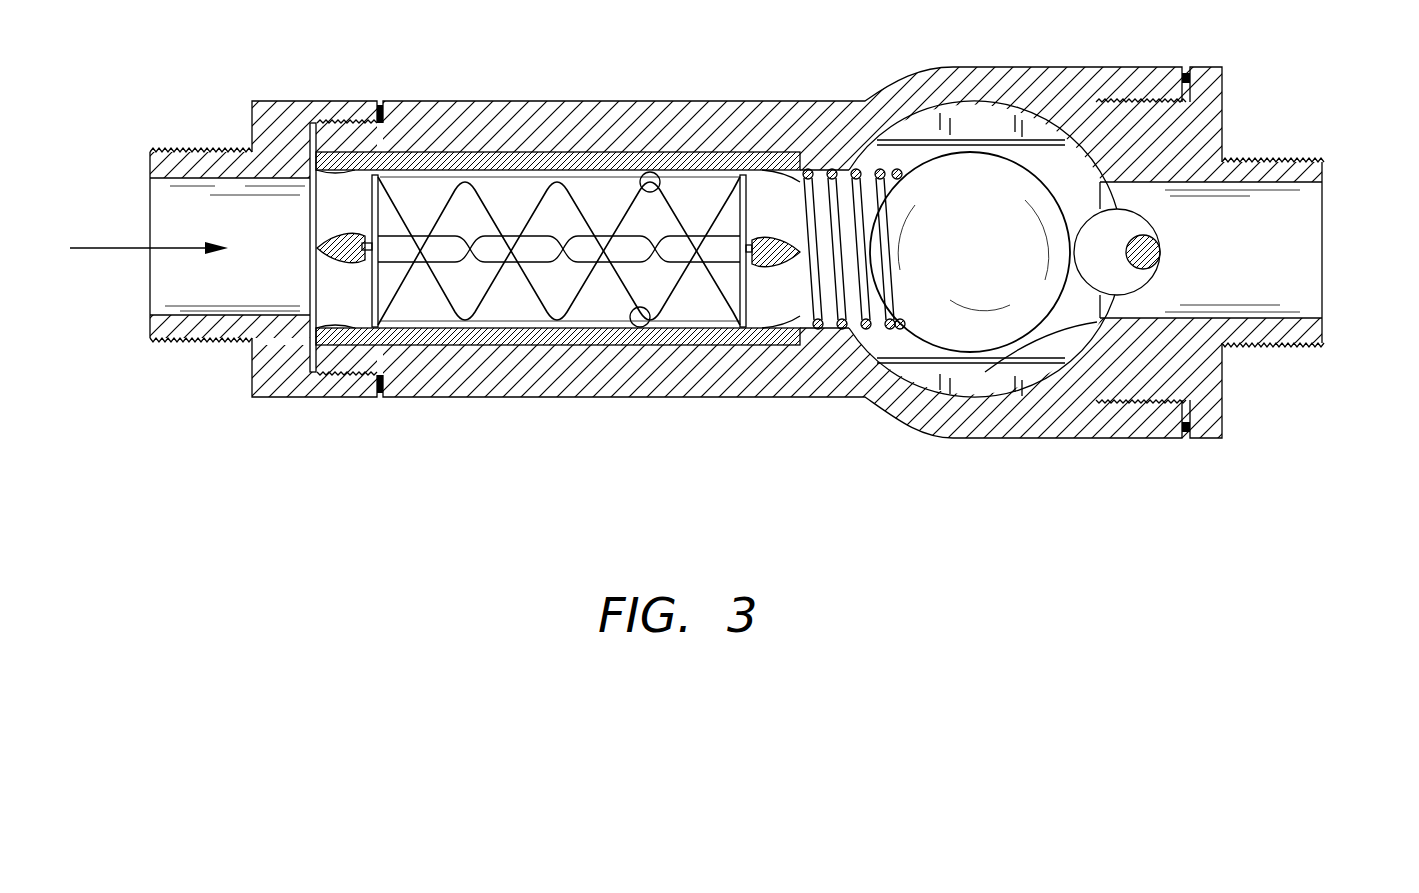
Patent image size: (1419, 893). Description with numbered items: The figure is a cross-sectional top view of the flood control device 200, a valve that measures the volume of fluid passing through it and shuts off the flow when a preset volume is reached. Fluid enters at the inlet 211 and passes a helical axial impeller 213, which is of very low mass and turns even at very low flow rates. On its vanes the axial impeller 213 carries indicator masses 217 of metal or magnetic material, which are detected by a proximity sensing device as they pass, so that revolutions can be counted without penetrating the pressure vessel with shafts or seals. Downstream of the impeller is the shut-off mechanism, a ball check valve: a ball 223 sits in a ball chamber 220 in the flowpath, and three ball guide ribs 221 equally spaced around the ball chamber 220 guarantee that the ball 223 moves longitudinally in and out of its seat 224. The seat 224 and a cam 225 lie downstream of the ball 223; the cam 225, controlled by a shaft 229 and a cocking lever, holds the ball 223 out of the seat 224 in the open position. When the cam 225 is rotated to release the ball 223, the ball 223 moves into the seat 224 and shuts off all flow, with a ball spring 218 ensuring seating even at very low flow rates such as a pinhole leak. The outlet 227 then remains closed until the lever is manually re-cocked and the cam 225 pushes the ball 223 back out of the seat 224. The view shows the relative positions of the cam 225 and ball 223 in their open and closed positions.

The flood control device 200 is at (215, 92).
The inlet 211 is at (183, 225).
The axial impeller 213 is at (577, 190).
The indicator masses 217 is at (642, 170).
The ball spring 218 is at (862, 330).
The ball chamber 220 is at (915, 345).
The ball guide ribs 221 is at (988, 115).
The ball 223 is at (930, 173).
The seat 224 is at (1007, 335).
The cam 225 is at (1133, 217).
The outlet 227 is at (1293, 287).
The shaft 229 is at (1160, 247).